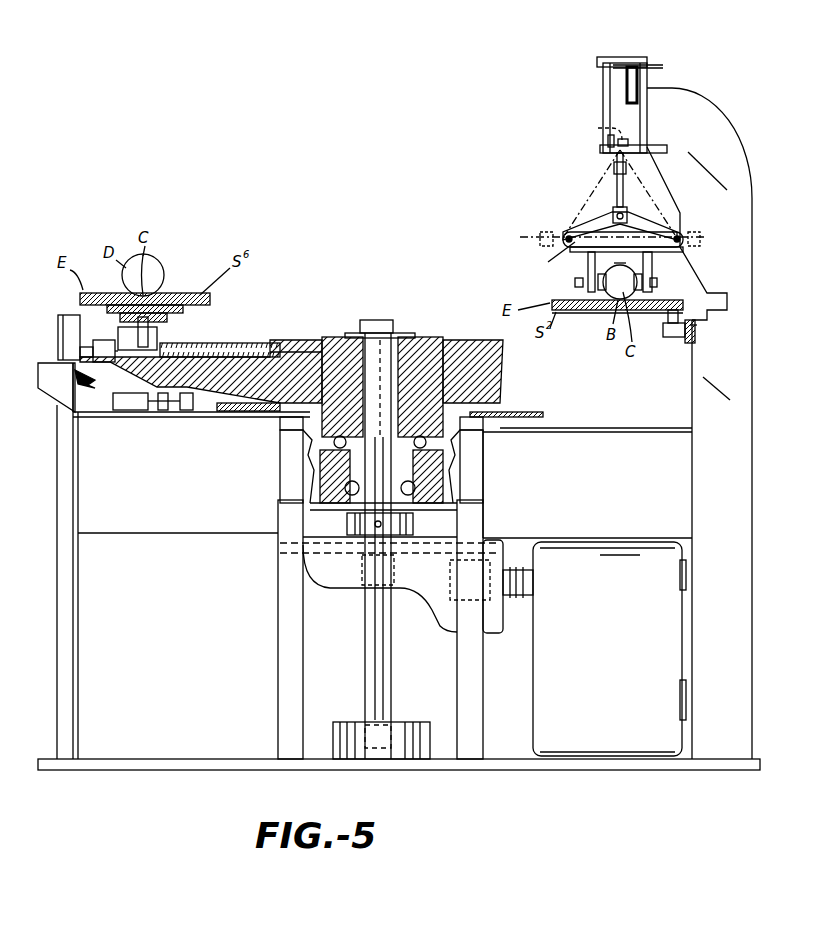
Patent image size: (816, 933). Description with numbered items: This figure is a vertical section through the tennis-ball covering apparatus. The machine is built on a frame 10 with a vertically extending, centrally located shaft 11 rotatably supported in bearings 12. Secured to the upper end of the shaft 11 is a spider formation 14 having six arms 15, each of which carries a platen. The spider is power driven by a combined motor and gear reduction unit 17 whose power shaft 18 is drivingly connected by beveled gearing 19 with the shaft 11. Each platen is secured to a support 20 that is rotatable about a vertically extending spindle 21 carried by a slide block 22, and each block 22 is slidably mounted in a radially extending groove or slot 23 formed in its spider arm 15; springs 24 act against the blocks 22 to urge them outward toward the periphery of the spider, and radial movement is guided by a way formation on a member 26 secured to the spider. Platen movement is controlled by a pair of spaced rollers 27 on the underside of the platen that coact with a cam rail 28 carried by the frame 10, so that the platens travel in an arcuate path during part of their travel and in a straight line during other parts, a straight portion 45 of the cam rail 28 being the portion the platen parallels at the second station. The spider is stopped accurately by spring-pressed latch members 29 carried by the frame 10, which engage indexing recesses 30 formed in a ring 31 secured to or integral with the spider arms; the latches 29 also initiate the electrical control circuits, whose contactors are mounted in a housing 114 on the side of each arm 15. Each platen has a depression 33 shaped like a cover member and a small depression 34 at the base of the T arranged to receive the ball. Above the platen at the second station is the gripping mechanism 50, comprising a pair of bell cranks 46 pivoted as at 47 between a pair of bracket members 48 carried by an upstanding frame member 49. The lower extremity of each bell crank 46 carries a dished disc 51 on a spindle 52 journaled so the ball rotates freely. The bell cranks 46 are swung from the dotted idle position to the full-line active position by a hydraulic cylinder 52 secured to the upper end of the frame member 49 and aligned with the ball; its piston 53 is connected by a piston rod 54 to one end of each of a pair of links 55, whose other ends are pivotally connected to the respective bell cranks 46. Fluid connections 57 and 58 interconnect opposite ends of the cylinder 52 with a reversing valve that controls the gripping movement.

The frame 10 is at (72, 510).
The shaft 11 is at (385, 345).
The bearings 12 is at (410, 512).
The spider formation 14 is at (425, 345).
The arms 15 is at (290, 345).
The combined motor and gear reduction unit 17 is at (609, 649).
The power shaft 18 is at (522, 600).
The beveled gearing 19 is at (420, 560).
The support 20 is at (210, 300).
The spindle 21 is at (150, 335).
The slide block 22 is at (185, 345).
The groove or slot 23 is at (108, 372).
The springs 24 is at (252, 345).
The member 26 is at (112, 336).
The rollers 27 is at (668, 337).
The cam rail 28 is at (62, 312).
The spring-pressed latch members 29 is at (160, 410).
The indexing recesses 30 is at (163, 412).
The ring 31 is at (186, 412).
The housing 114 is at (222, 418).
The depression 33 is at (620, 275).
The small depression 34 is at (612, 305).
The straight portion 45 is at (695, 333).
The bell cranks 46 is at (540, 236).
The pivot 47 is at (551, 259).
The bracket members 48 is at (610, 222).
The upstanding frame member 49 is at (679, 107).
The gripping mechanism 50 is at (590, 228).
The ball gripping member or dished disc 51 is at (600, 290).
The spindle 52 is at (603, 103).
The piston 53 is at (598, 128).
The piston rod 54 is at (615, 165).
The links 55 is at (636, 222).
The fluid connection 57 is at (655, 65).
The fluid connection 58 is at (660, 147).